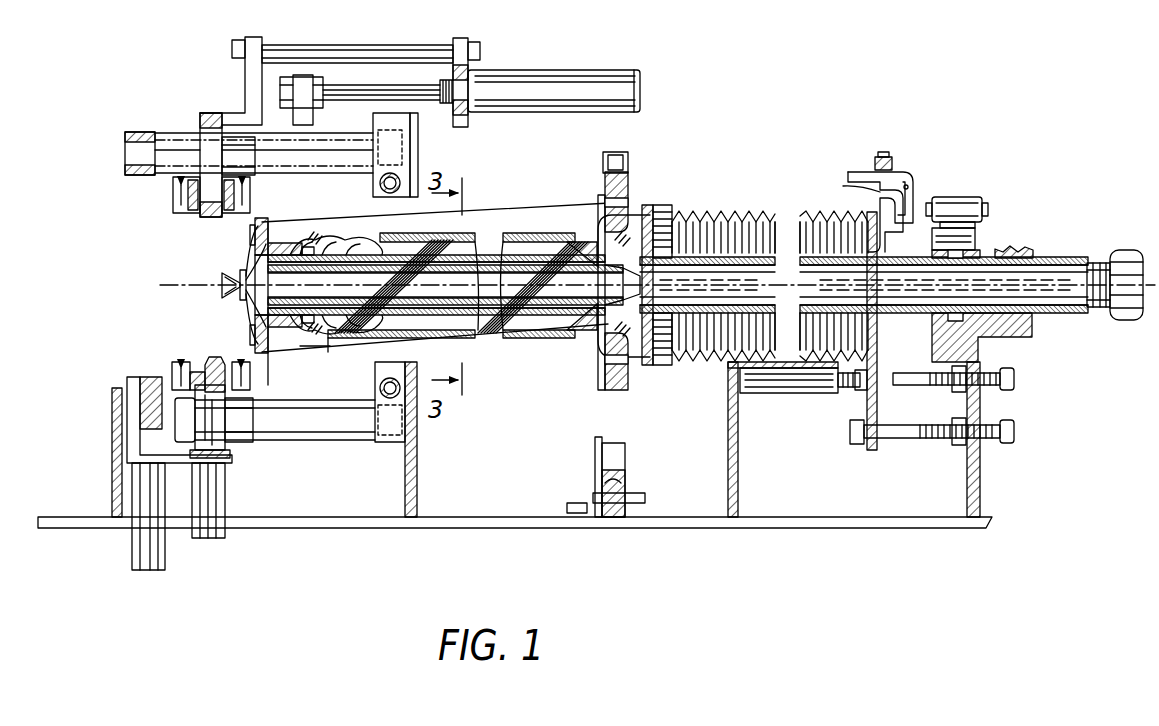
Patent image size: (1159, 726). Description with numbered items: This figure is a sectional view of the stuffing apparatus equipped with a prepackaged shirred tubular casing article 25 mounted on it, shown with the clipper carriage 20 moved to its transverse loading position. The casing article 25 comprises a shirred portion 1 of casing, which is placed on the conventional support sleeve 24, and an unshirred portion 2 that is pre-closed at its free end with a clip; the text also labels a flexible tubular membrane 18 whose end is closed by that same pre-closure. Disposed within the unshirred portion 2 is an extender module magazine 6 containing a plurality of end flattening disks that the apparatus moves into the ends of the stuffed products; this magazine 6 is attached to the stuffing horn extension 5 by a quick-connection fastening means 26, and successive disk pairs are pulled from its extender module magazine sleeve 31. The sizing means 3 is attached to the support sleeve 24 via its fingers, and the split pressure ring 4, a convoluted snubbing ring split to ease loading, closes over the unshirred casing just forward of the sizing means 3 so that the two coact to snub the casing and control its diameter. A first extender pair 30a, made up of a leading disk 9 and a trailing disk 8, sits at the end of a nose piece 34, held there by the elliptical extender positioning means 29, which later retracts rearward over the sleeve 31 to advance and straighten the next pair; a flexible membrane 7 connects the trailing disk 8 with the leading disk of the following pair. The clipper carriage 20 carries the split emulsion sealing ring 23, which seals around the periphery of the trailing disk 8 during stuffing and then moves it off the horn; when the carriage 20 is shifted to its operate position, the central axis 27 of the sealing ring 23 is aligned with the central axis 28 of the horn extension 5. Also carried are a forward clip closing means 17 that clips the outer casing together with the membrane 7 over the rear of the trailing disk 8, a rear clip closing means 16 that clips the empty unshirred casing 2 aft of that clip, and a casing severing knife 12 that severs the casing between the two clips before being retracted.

The shirred portion 1 is at (703, 216).
The unshirred portion 2 is at (462, 342).
The sizing means 3 is at (664, 211).
The pressure ring 4 is at (622, 350).
The stuffing horn extension 5 is at (580, 255).
The extender module magazine 6 is at (386, 244).
The flexible membrane 7 is at (318, 252).
The trailing disk 8 is at (282, 243).
The leading disk 9 is at (255, 237).
The casing severing knife 12 is at (214, 357).
The rear clip closing means 16 is at (238, 380).
The forward clip closing means 17 is at (180, 362).
The bag 18 is at (244, 296).
The clipper carriage 20 is at (172, 136).
The split emulsion sealing ring 23 is at (157, 377).
The support sleeve 24 is at (722, 253).
The casing article 25 is at (428, 212).
The quick-connection fastening means 26 is at (606, 266).
The central axis 27 is at (224, 284).
The central axis 28 is at (432, 292).
The extender positioning means 29 is at (275, 370).
The first extender pair 30a is at (290, 350).
The extender module magazine sleeve 31 is at (372, 340).
The nose piece 34 is at (268, 263).